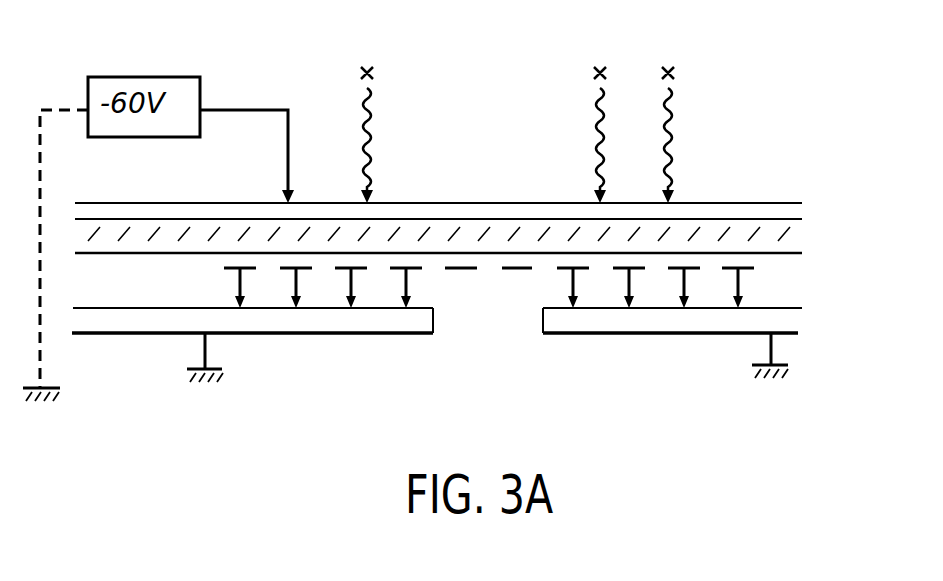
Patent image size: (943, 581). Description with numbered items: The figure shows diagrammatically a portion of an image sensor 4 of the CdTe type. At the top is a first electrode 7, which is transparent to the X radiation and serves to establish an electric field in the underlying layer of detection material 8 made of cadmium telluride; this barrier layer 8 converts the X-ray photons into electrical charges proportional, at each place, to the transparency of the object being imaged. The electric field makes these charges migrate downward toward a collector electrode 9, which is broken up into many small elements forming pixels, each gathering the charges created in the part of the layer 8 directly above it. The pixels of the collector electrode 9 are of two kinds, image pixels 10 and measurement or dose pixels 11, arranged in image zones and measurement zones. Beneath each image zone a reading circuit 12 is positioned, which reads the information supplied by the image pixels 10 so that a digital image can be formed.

The image sensor 4 is at (756, 106).
The first electrode 7 is at (772, 203).
The layer of detection material 8 is at (803, 230).
The collector electrode 9 is at (792, 278).
The image pixels 10 is at (412, 270).
The measurement pixels 11 is at (470, 270).
The reading circuit 12 is at (330, 334).